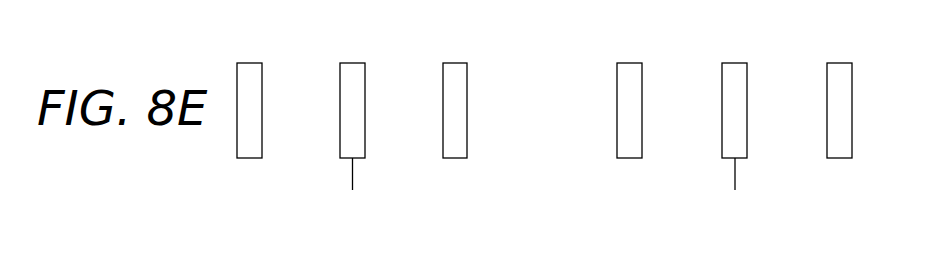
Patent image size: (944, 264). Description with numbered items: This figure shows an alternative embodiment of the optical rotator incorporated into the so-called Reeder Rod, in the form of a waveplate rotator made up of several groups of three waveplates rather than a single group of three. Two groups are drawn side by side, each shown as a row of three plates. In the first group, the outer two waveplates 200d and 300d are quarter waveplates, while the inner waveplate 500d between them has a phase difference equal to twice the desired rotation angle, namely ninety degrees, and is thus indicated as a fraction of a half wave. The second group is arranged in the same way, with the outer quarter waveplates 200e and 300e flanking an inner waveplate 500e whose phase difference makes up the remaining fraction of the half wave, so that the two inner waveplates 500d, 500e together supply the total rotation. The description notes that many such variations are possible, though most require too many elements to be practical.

The quarter waveplate 200d is at (249, 63).
The inner waveplate 500d is at (352, 63).
The quarter waveplate 300d is at (455, 63).
The quarter waveplate 200e is at (628, 63).
The inner waveplate 500e is at (733, 63).
The quarter waveplate 300e is at (838, 63).